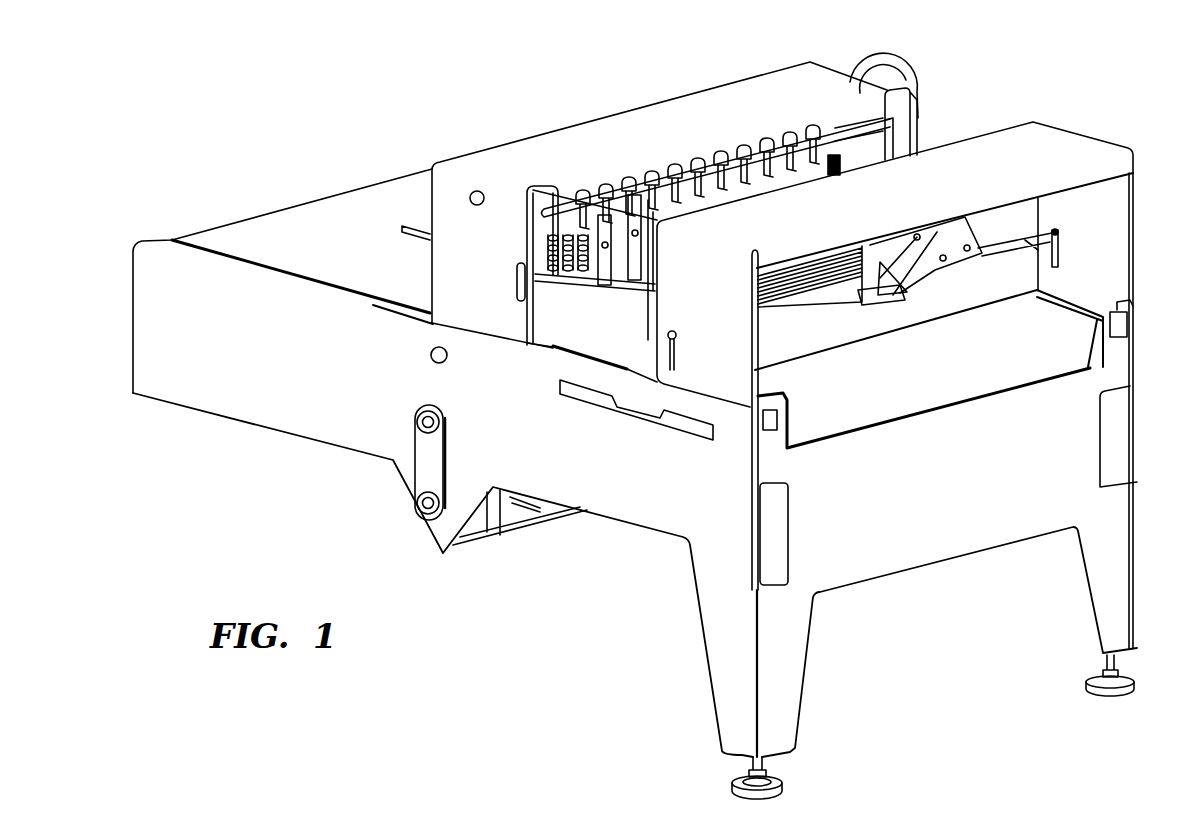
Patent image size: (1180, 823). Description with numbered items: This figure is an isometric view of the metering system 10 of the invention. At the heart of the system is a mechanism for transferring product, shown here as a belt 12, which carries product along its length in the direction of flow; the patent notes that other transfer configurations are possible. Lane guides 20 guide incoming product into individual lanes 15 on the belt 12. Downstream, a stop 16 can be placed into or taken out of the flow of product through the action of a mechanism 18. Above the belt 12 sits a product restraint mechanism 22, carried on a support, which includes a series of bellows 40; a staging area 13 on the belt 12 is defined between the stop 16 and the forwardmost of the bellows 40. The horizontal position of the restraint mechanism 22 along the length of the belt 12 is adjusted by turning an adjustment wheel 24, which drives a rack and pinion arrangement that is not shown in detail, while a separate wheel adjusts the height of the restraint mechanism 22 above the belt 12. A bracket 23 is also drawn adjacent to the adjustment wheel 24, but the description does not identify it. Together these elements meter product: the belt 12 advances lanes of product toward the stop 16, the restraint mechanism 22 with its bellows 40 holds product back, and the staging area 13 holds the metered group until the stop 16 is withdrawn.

The metering system 10 is at (1027, 86).
The belt 12 is at (336, 257).
The staging area 13 is at (585, 320).
The lanes 15 is at (830, 270).
The stop 16 is at (908, 317).
The mechanism 18 is at (917, 262).
The lane guides 20 is at (826, 272).
The product restraint mechanism 22 is at (790, 93).
The rail bracket 23 is at (897, 140).
The adjustment wheel 24 is at (903, 66).
The bellows 40 is at (572, 240).